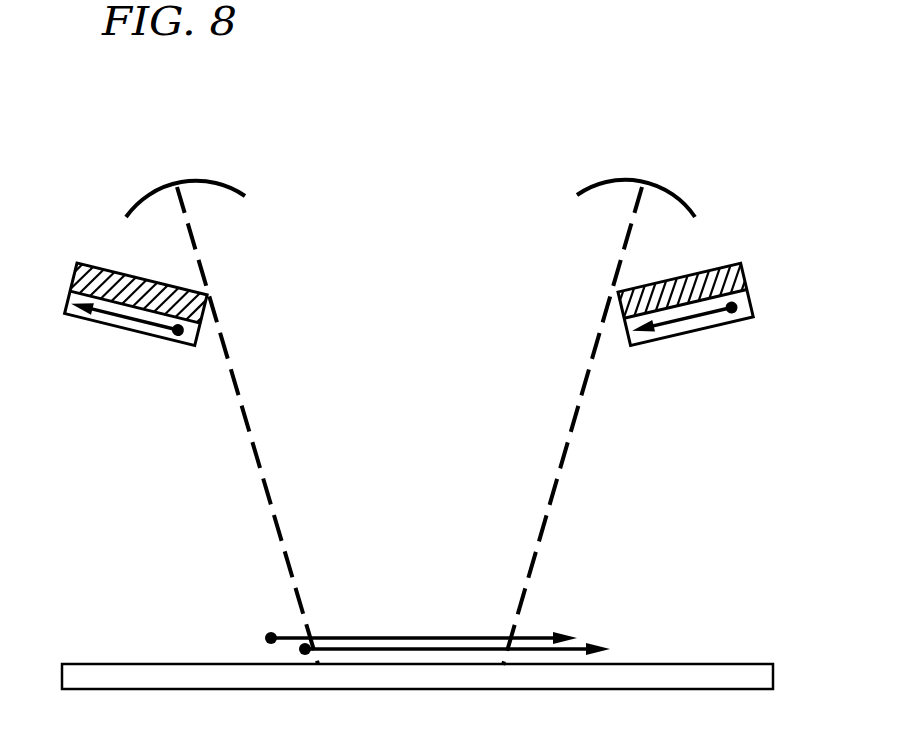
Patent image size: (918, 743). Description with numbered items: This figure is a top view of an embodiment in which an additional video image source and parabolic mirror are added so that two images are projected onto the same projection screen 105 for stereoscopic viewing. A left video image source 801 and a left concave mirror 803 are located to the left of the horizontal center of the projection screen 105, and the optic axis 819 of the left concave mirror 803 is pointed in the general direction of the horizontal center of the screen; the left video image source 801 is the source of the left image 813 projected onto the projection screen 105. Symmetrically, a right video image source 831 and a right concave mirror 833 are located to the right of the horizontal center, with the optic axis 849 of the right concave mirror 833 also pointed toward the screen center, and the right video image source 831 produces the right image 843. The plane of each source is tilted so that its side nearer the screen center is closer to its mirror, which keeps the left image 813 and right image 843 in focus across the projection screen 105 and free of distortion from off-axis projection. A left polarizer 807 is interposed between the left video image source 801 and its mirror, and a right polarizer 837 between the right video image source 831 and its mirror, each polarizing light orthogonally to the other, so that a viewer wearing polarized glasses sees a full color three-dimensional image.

The projection screen 105 is at (755, 663).
The left video image source 801 is at (750, 317).
The left concave mirror 803 is at (673, 188).
The left polarizer 807 is at (743, 272).
The left image 813 is at (580, 643).
The optic axis of left concave mirror 819 is at (625, 238).
The right video image source 831 is at (66, 300).
The right concave mirror 833 is at (157, 188).
The right polarizer 837 is at (78, 266).
The right image 843 is at (398, 635).
The optic axis of right concave mirror 849 is at (250, 425).